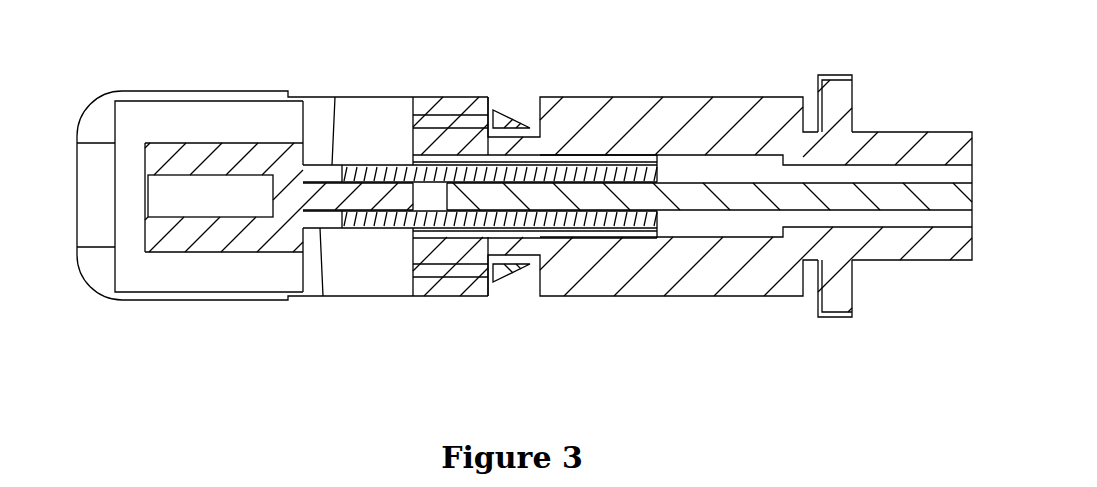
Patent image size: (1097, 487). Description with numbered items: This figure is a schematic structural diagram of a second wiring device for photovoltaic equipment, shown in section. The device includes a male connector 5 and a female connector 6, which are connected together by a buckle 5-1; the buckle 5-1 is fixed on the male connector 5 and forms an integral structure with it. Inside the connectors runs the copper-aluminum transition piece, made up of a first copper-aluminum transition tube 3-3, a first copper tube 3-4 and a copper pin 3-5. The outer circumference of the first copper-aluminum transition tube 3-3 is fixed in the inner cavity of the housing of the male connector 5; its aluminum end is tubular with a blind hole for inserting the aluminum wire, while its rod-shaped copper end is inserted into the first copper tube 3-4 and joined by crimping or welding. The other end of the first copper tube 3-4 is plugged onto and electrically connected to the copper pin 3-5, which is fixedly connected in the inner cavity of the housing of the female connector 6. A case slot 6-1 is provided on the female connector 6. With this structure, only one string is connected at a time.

The male connector 5 is at (97, 113).
The first copper-aluminum transition tube 3-3 is at (260, 162).
The first copper tube 3-4 is at (397, 172).
The buckle 5-1 is at (512, 120).
The copper pin 3-5 is at (740, 192).
The female connector 6 is at (943, 143).
The case slot 6-1 is at (808, 293).